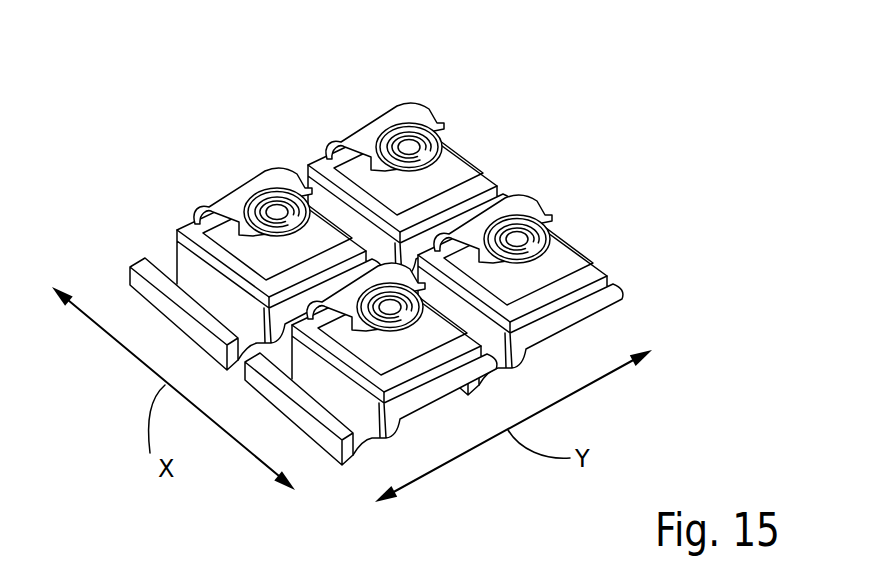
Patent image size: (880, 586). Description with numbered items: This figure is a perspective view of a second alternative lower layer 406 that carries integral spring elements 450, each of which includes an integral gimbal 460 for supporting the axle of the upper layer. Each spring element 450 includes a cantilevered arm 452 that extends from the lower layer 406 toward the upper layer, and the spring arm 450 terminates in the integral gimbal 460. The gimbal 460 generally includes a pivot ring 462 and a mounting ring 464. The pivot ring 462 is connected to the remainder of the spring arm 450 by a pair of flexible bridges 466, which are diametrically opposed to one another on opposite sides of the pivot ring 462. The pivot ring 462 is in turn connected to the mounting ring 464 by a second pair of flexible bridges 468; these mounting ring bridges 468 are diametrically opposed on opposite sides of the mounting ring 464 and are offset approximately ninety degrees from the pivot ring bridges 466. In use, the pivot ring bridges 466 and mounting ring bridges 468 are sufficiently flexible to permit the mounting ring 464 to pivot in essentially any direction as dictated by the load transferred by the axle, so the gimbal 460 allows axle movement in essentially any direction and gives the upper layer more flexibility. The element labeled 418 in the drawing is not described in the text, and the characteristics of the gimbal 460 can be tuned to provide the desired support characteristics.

The lower layer 406 is at (409, 245).
The grommet 418 is at (282, 212).
The spring element 450 is at (553, 221).
The cantilevered arm 452 is at (536, 204).
The integral gimbal 460 is at (540, 252).
The pivot ring 462 is at (530, 243).
The mounting ring 464 is at (537, 244).
The pivot ring bridges 466 is at (374, 163).
The mounting ring bridges 468 is at (397, 128).